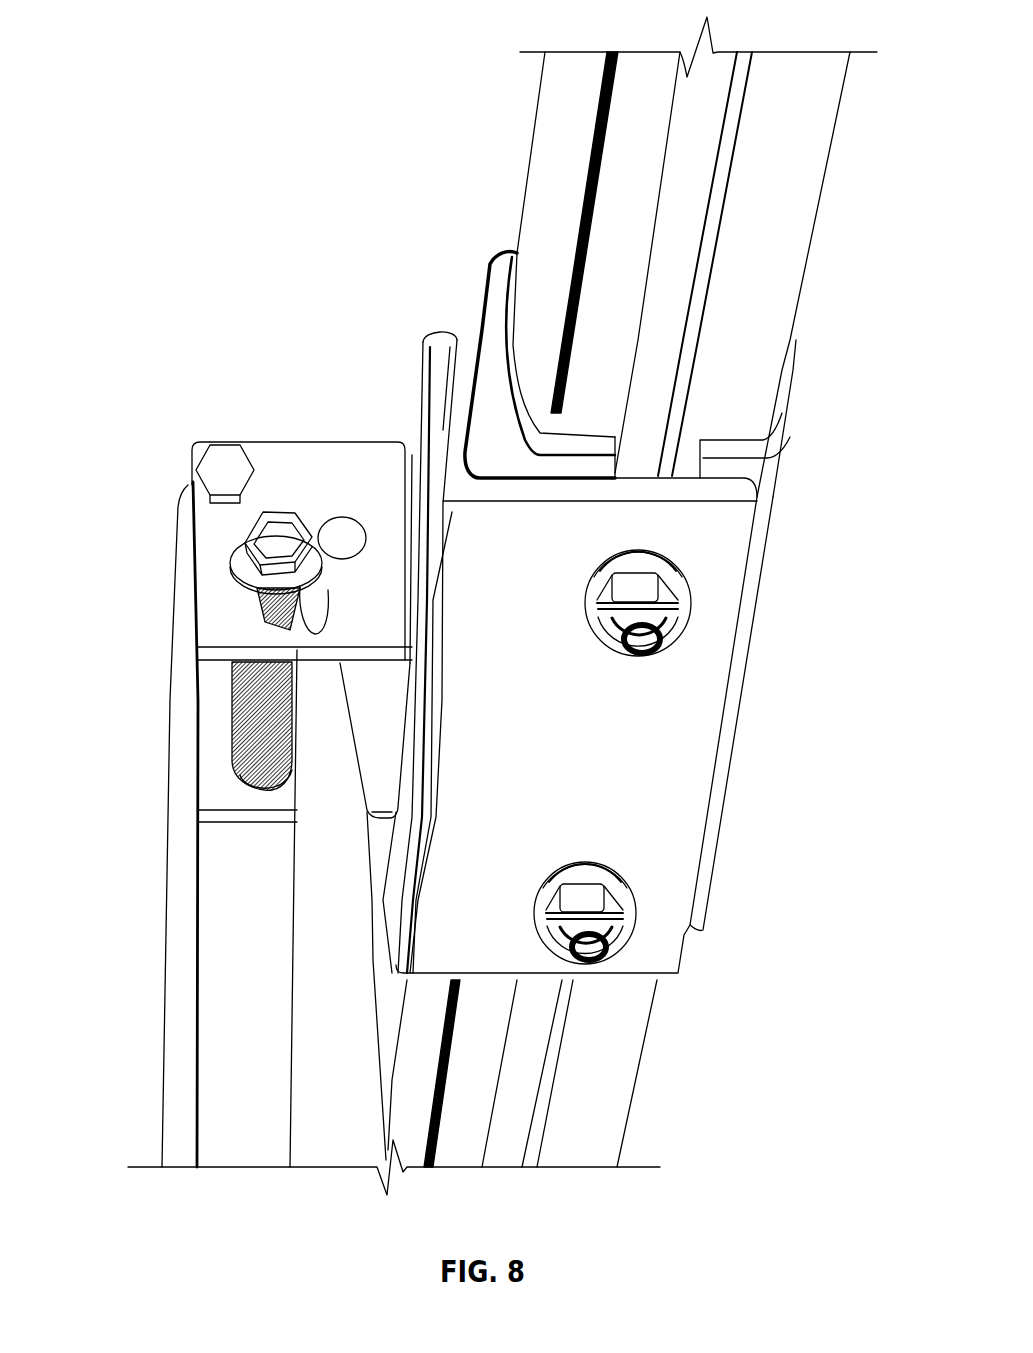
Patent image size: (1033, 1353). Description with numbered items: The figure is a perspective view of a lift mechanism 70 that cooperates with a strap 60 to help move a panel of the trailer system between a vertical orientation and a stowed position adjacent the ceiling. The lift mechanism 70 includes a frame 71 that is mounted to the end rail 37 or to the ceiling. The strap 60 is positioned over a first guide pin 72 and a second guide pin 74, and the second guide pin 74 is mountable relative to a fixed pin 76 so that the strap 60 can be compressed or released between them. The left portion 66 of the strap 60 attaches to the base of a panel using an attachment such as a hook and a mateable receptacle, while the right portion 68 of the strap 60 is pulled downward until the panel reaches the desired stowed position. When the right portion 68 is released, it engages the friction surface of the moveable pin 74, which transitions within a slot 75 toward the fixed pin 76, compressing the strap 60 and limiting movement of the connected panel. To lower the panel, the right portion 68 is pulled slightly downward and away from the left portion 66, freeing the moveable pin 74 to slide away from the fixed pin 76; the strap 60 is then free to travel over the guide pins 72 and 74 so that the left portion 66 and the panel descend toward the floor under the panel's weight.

The end rail 37 is at (560, 147).
The strap 60 is at (350, 1132).
The left portion of the strap 66 is at (145, 958).
The right portion of the strap 68 is at (281, 1026).
The lift mechanism 70 is at (280, 265).
The frame 71 is at (290, 440).
The guide pin 72 is at (218, 468).
The second guide pin 74 is at (267, 695).
The slot 75 is at (308, 625).
The fixed pin 76 is at (337, 537).